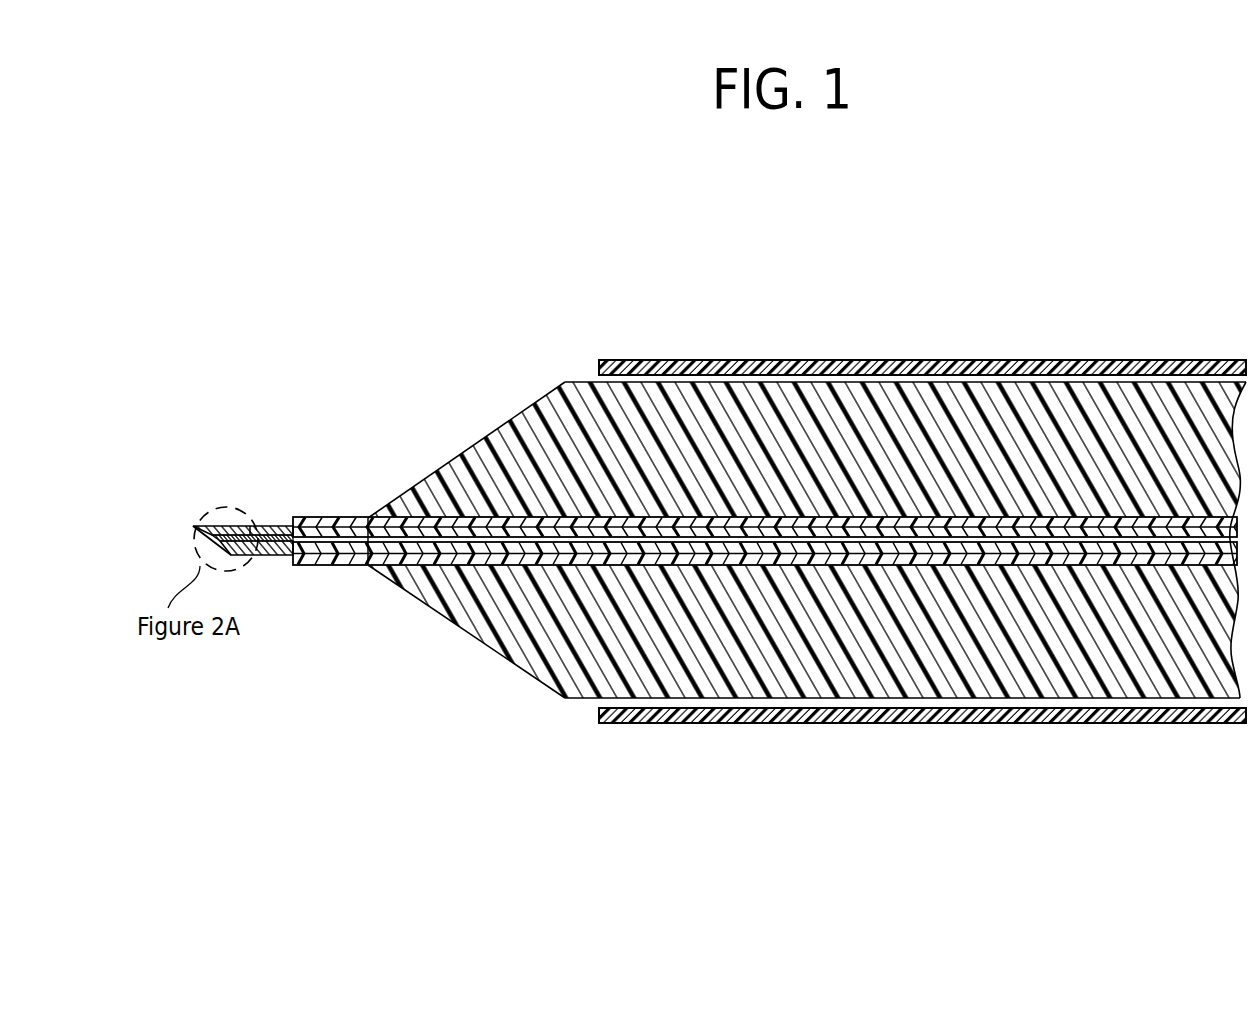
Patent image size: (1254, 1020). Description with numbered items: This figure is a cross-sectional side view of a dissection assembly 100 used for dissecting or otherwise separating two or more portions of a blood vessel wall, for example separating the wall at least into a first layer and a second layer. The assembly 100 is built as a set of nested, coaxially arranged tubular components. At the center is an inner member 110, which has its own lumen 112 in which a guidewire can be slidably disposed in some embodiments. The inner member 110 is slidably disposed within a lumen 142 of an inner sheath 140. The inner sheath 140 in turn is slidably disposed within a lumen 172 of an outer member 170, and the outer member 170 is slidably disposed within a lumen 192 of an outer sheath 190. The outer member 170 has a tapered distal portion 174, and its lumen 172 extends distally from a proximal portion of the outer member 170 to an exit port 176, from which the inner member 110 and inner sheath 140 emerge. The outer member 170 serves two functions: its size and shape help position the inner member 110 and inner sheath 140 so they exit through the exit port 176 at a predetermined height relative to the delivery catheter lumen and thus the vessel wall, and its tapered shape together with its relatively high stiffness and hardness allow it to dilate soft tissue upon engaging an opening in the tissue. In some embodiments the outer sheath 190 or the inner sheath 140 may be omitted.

The dissection assembly 100 is at (989, 202).
The inner member 110 is at (213, 523).
The lumen of the inner member 112 is at (256, 526).
The inner sheath 140 is at (334, 516).
The lumen of the inner sheath 142 is at (299, 517).
The outer member 170 is at (527, 427).
The lumen of the outer member 172 is at (478, 508).
The tapered distal portion 174 is at (503, 656).
The exit port 176 is at (372, 517).
The outer sheath 190 is at (815, 361).
The lumen of the outer sheath 192 is at (706, 381).